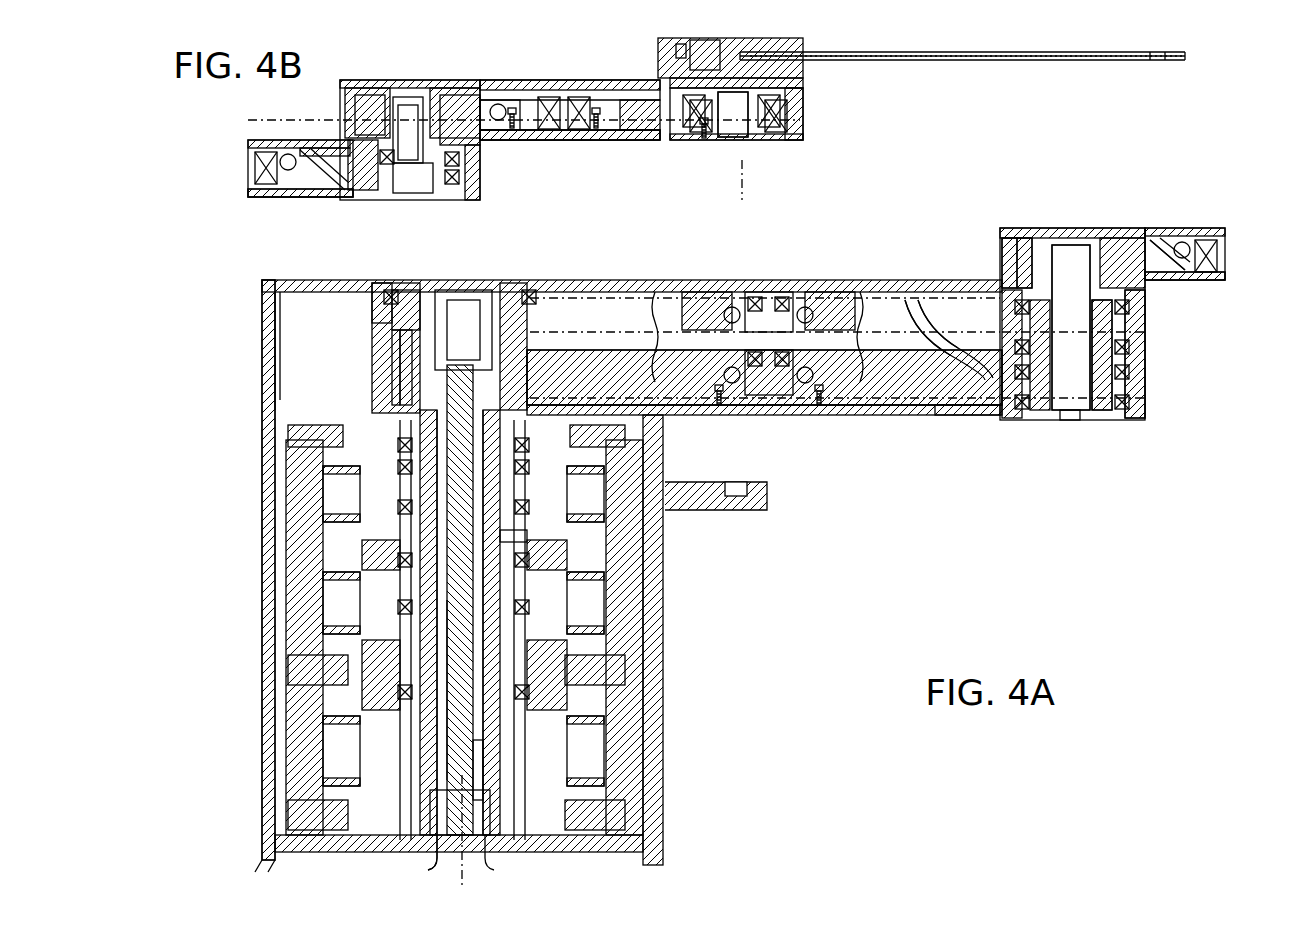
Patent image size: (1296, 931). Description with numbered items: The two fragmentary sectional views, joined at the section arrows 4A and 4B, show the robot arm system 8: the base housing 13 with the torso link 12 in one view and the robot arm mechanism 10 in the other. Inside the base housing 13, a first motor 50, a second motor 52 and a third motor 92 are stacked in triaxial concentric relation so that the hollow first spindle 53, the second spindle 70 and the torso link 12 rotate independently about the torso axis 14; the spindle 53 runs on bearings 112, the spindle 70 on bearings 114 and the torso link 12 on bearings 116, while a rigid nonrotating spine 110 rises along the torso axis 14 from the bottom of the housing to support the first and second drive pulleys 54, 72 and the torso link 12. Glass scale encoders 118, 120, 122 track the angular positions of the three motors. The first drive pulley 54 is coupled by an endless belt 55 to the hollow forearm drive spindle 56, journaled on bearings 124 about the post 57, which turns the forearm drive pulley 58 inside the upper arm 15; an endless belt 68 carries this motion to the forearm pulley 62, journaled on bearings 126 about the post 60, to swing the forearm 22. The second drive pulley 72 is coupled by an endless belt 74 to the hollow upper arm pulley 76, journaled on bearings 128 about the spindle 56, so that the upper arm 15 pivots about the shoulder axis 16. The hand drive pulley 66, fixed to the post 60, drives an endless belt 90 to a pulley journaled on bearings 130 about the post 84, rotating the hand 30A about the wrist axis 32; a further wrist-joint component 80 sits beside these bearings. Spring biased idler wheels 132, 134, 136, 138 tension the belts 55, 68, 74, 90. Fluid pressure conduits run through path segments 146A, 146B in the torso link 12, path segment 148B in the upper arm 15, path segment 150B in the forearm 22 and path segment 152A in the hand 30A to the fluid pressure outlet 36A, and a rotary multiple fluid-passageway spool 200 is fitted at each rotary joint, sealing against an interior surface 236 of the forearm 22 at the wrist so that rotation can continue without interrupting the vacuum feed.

In FIG. 4A, the robot arm system 8 is at (870, 540).
In FIG. 4B, the robot assembly 10 is at (848, 152).
In FIG. 4A, the torso link 12 is at (900, 415).
In FIG. 4A, the base housing 13 is at (262, 838).
In FIG. 4A, the torso axis 14 is at (465, 882).
In FIG. 4B, the upper arm 15 is at (272, 198).
In FIG. 4A, the upper arm 15 is at (1198, 282).
In FIG. 4A, the shoulder axis 16 is at (1070, 420).
In FIG. 4B, the forearm 22 is at (592, 140).
In FIG. 4B, the hand 30A is at (920, 54).
In FIG. 4B, the wrist axis 32 is at (742, 190).
In FIG. 4B, the fluid pressure outlet 36A is at (1092, 54).
In FIG. 4A, the first motor 50 is at (463, 603).
In FIG. 4A, the second motor 52 is at (463, 751).
In FIG. 4A, the hollow first spindle 53 is at (522, 540).
In FIG. 4A, the first drive pulley 54 is at (398, 382).
In FIG. 4A, the endless belt 55 is at (388, 356).
In FIG. 4A, the hollow forearm drive spindle 56 is at (1125, 382).
In FIG. 4A, the post 57 is at (1070, 327).
In FIG. 4A, the forearm drive pulley 58 is at (1028, 245).
In FIG. 4B, the post 60 is at (410, 190).
In FIG. 4B, the forearm pulley 62 is at (470, 170).
In FIG. 4B, the hand drive pulley 66 is at (378, 95).
In FIG. 4B, the endless belt 68 is at (340, 142).
In FIG. 4A, the endless belt 68 is at (1008, 236).
In FIG. 4A, the second spindle 70 is at (492, 682).
In FIG. 4A, the second drive pulley 72 is at (398, 326).
In FIG. 4A, the endless belt 74 is at (622, 300).
In FIG. 4A, the hollow upper arm pulley 76 is at (1132, 322).
In FIG. 4B, the spindle 80 is at (750, 108).
In FIG. 4B, the post 84 is at (695, 60).
In FIG. 4B, the endless belt 90 is at (447, 95).
In FIG. 4A, the third motor 92 is at (463, 494).
In FIG. 4A, the spine 110 is at (490, 755).
In FIG. 4A, the bearings 112 is at (398, 455).
In FIG. 4A, the bearings 114 is at (386, 288).
In FIG. 4A, the bearings 116 is at (410, 290).
In FIG. 4A, the glass scale encoder 118 is at (300, 672).
In FIG. 4A, the glass scale encoder 120 is at (300, 822).
In FIG. 4A, the glass scale encoder 122 is at (300, 434).
In FIG. 4A, the bearings 124 is at (1125, 370).
In FIG. 4B, the bearings 126 is at (398, 180).
In FIG. 4A, the bearings 128 is at (1016, 322).
In FIG. 4B, the bearings 130 is at (788, 98).
In FIG. 4A, the spring biased idler wheel 132 is at (778, 405).
In FIG. 4A, the spring biased idler wheel 134 is at (790, 292).
In FIG. 4B, the spring biased idler wheel 136 is at (275, 150).
In FIG. 4A, the spring biased idler wheel 136 is at (1210, 235).
In FIG. 4B, the spring biased idler wheel 138 is at (545, 95).
In FIG. 4A, the path segment 146A is at (912, 302).
In FIG. 4A, the path segment 146B is at (930, 300).
In FIG. 4B, the path segment 148B is at (318, 178).
In FIG. 4A, the path segment 148B is at (1165, 240).
In FIG. 4B, the path segment 150B is at (505, 95).
In FIG. 4B, the path segment 152A is at (888, 62).
In FIG. 4B, the rotary multiple fluid-passageway spool 200 is at (408, 97).
In FIG. 4A, the rotary multiple fluid-passageway spool 200 is at (460, 300).
In FIG. 4B, the interior surface 236 is at (745, 137).
In FIG. 4B, the section view direction 4A is at (235, 173).
In FIG. 4A, the section view direction 4B is at (1232, 250).